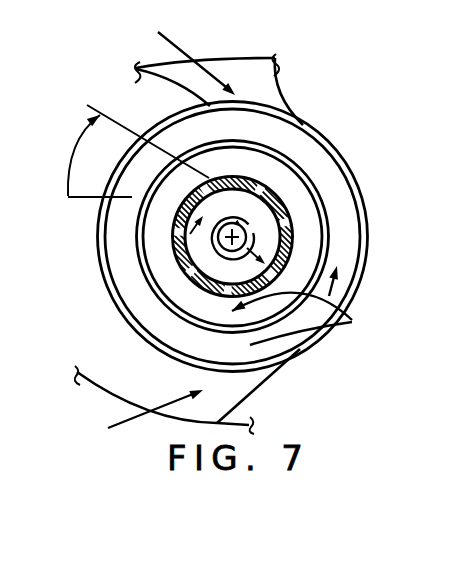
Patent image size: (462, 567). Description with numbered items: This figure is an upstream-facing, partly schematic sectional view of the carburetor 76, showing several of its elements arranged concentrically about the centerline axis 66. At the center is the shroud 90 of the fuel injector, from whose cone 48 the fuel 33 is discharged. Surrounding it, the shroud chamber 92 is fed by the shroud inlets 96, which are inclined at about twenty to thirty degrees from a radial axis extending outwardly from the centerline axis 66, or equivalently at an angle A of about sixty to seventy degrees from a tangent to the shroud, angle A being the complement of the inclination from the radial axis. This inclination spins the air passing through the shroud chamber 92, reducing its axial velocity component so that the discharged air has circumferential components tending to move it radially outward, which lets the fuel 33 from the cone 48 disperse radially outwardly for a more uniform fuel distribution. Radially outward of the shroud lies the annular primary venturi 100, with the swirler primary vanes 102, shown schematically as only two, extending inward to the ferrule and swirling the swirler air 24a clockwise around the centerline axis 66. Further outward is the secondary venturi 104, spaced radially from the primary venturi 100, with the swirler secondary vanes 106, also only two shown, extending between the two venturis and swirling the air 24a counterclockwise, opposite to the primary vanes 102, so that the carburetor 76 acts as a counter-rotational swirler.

The swirler air 24a is at (182, 49).
The swirler primary vanes 102 is at (283, 91).
The secondary venturi 104 is at (297, 141).
The primary venturi 100 is at (298, 187).
The fuel 33 is at (274, 214).
The carburetor 76 is at (381, 217).
The centerline axis 66 is at (232, 237).
The shroud inlets 96 is at (178, 231).
The cone 48 is at (201, 271).
The shroud 90 is at (211, 246).
The shroud chamber 92 is at (223, 279).
The swirler secondary vanes 106 is at (262, 388).
The angle A is at (118, 151).